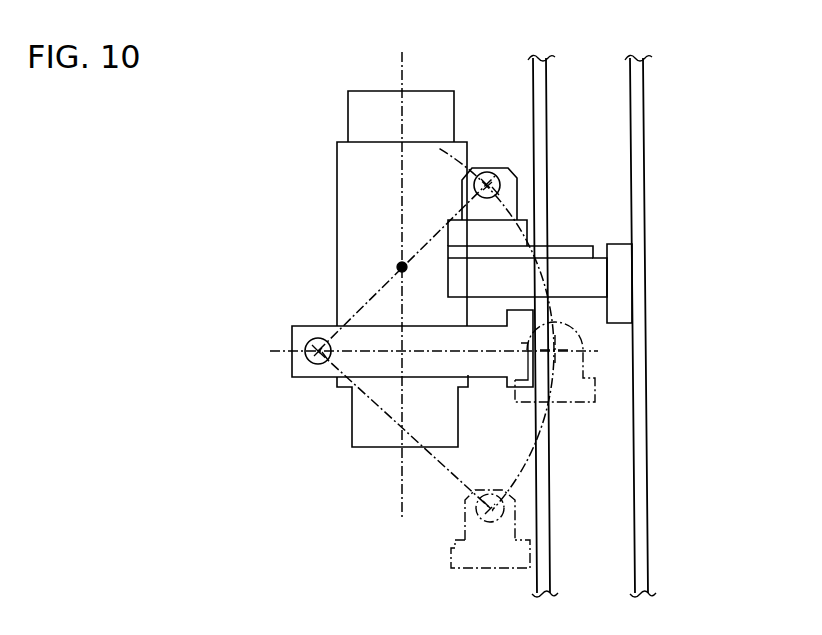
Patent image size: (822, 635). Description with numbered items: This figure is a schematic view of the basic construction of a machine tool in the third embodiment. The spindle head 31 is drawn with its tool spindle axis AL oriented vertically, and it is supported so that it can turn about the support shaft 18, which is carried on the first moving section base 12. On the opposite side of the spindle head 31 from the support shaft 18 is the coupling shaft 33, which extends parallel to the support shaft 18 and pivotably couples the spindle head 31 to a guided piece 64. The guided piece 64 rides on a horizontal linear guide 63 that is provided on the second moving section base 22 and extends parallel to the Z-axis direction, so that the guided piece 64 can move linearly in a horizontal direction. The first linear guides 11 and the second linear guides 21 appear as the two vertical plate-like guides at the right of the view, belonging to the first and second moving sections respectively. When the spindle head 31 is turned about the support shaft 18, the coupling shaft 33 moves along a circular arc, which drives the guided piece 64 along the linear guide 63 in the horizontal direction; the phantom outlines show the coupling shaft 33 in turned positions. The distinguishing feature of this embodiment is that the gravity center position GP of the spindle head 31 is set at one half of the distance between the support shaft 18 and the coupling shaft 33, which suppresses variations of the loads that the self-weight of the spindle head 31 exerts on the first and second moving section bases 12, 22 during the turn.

The first linear guides 11 is at (533, 84).
The second linear guides 21 is at (640, 87).
The second moving section base 22 is at (592, 282).
The spindle head 31 is at (350, 197).
The coupling shaft 33 is at (487, 152).
The linear guide 63 is at (564, 256).
The guided piece 64 is at (497, 225).
The support shaft 18 is at (307, 343).
The first moving section base 12 is at (350, 366).
The gravity center position GP is at (400, 267).
The tool spindle axis AL is at (403, 488).